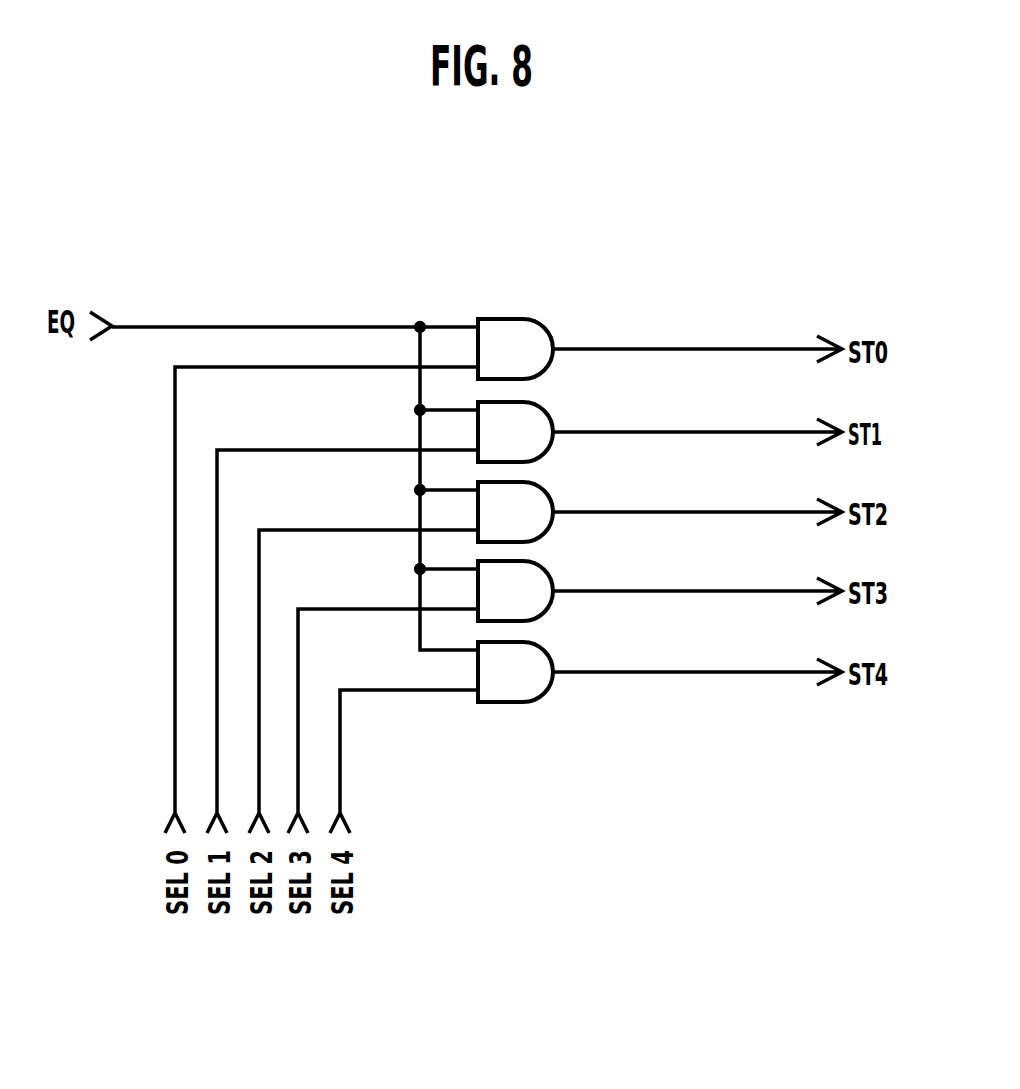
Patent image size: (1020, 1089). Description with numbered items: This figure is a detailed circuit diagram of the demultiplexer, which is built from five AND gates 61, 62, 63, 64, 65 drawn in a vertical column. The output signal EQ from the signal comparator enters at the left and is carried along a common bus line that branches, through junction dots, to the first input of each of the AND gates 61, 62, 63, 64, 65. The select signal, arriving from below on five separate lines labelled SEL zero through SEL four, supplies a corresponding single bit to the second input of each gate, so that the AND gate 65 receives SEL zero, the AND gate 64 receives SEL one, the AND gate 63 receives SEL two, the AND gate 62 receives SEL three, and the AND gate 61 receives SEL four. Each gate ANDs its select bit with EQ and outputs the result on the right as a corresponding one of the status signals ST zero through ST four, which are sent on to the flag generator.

The AND gate 61 is at (540, 664).
The AND gate 62 is at (537, 584).
The AND gate 63 is at (536, 504).
The AND gate 64 is at (535, 422).
The AND gate 65 is at (527, 330).